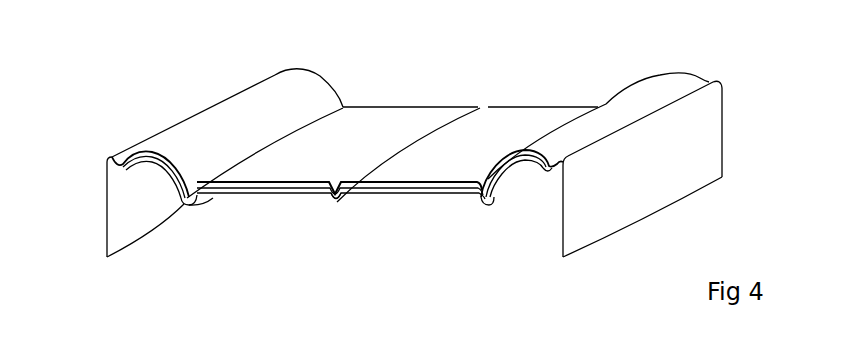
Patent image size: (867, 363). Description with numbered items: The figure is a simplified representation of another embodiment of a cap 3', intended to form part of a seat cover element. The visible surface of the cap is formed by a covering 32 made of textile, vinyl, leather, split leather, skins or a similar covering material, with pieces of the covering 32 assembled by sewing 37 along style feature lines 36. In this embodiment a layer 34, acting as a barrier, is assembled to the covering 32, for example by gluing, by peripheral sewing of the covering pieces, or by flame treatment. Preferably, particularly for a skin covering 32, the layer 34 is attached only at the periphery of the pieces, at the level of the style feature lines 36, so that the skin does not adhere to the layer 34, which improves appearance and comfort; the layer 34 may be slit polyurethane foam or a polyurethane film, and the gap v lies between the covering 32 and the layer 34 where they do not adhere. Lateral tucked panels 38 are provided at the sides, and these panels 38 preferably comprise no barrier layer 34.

The panel assembly 3' is at (783, 65).
The covering 32 is at (165, 155).
The layer 34 is at (396, 187).
The style feature lines 36 is at (315, 120).
The sewing 37 is at (188, 205).
The lateral tucked panels 38 is at (105, 211).
The gap v is at (145, 158).